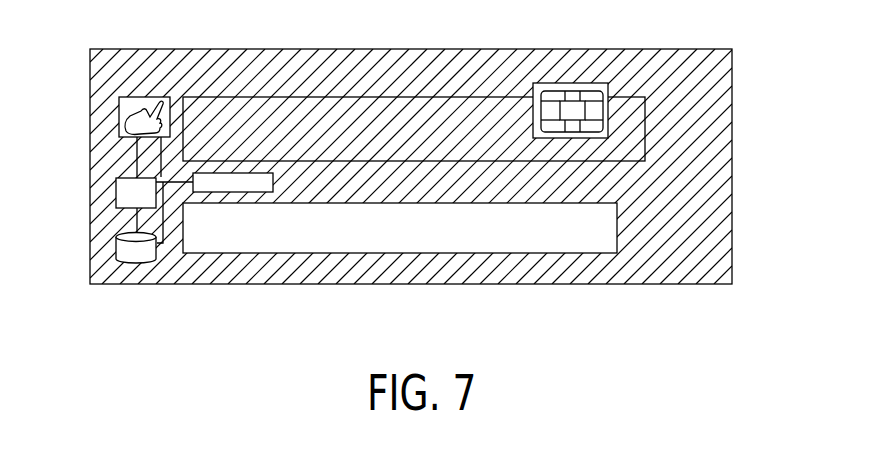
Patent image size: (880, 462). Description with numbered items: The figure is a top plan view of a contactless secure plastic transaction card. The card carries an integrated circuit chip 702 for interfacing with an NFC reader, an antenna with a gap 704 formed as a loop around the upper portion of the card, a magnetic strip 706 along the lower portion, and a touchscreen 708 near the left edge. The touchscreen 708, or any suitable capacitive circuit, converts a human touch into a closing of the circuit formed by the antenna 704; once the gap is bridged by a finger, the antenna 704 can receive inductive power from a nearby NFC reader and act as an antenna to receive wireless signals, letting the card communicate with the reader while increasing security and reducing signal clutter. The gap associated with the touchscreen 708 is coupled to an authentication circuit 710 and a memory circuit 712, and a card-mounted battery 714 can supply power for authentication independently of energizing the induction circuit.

The integrated circuit (chip) 702 is at (563, 83).
The antenna with a gap 704 is at (648, 134).
The magnetic strip 706 is at (619, 227).
The touchscreen 708 is at (119, 115).
The authentication circuit 710 is at (116, 190).
The memory circuit 712 is at (116, 248).
The card-mounted battery 714 is at (235, 172).